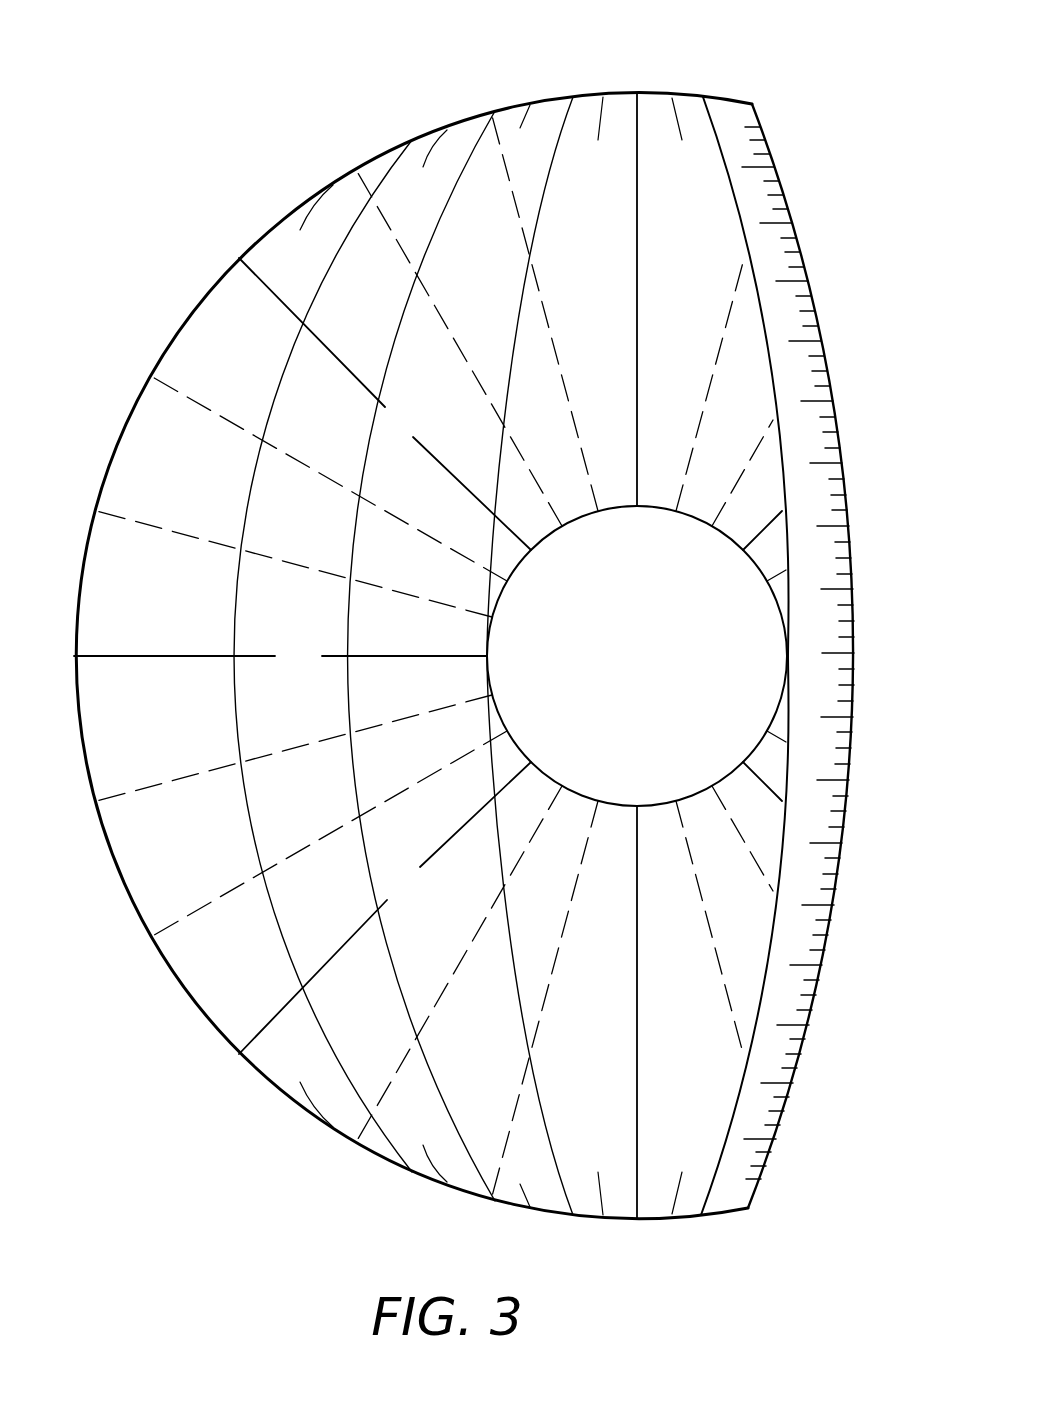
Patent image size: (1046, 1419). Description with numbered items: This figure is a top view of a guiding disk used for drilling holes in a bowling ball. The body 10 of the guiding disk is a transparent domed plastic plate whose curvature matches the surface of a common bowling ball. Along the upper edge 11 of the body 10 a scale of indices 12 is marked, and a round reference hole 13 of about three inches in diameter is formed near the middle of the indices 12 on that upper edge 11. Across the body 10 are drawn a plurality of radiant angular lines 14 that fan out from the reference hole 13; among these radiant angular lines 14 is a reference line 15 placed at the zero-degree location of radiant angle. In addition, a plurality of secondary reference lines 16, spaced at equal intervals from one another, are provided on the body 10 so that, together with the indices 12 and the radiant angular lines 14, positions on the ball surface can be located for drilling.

The body 10 is at (185, 993).
The upper edge 11 is at (793, 225).
The indices 12 is at (828, 653).
The reference hole 13 is at (694, 593).
The radiant angular lines 14 is at (185, 388).
The reference line 15 is at (639, 132).
The secondary reference lines 16 is at (325, 1032).